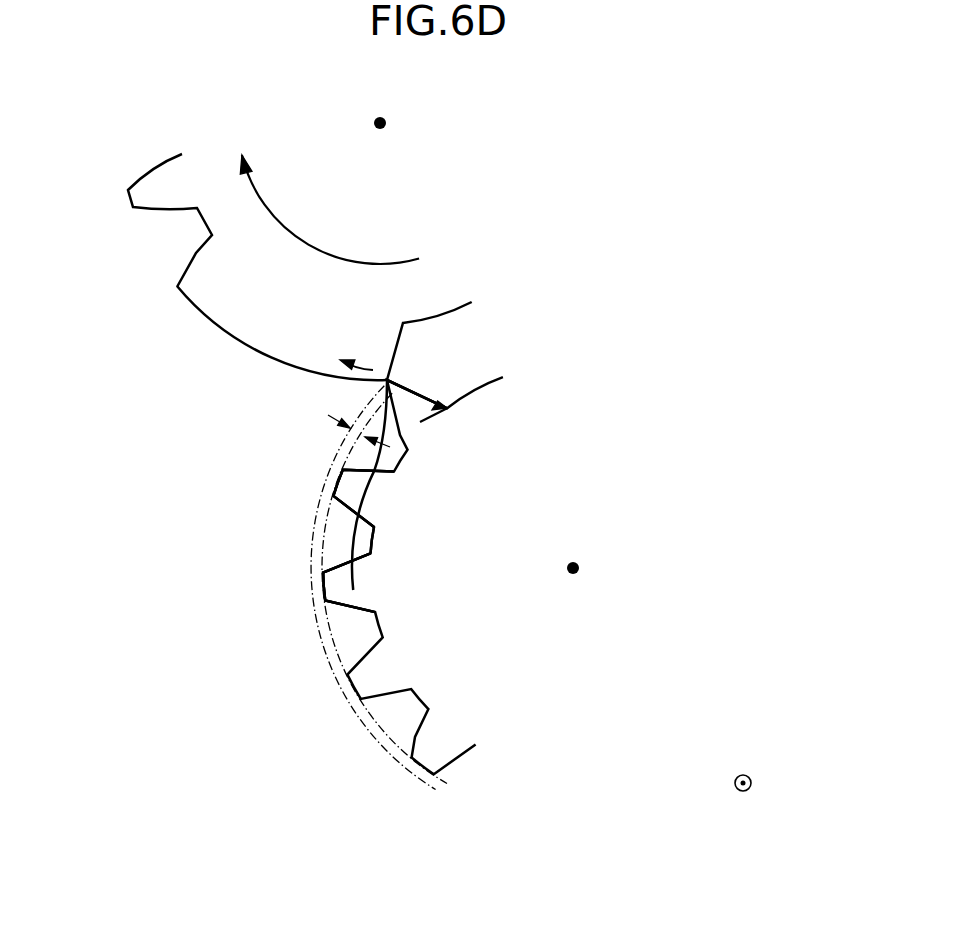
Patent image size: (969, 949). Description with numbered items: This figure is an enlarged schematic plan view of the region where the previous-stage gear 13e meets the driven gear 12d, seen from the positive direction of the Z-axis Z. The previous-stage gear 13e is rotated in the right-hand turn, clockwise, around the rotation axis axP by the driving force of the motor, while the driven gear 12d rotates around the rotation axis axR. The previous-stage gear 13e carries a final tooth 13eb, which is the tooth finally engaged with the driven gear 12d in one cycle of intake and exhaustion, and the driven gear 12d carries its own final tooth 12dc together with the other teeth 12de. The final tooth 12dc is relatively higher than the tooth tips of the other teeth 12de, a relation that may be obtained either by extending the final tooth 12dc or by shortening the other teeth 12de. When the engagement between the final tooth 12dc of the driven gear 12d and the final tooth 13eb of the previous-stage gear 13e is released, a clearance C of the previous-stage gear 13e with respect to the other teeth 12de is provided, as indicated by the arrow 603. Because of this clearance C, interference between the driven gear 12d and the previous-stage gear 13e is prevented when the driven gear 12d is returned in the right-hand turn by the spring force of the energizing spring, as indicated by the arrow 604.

The previous-stage gear 13e is at (274, 267).
The final tooth 13eb is at (203, 317).
The arrow 603 is at (362, 365).
The driven gear 12d is at (372, 561).
The final tooth 12dc is at (410, 387).
The other teeth 12de is at (337, 482).
The arrow 604 is at (357, 537).
The clearance C is at (348, 432).
The rotation axis axP is at (388, 123).
The rotation axis axR is at (582, 566).
The Z-axis Z is at (751, 784).